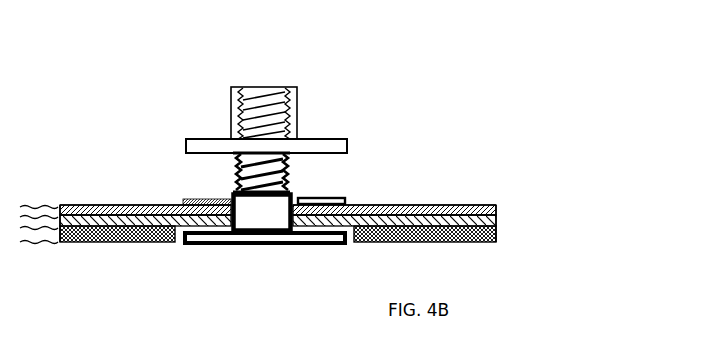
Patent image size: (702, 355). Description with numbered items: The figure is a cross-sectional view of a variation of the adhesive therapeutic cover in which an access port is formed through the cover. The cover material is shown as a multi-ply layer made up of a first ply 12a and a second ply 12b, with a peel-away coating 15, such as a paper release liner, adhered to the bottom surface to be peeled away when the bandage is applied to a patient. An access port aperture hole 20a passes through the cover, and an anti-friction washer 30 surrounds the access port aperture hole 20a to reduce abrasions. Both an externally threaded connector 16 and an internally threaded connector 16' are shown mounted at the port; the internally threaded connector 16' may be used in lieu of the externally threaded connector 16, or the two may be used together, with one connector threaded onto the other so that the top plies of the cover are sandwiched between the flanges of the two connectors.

The internally threaded connector 16' is at (281, 106).
The anti-friction washer 30 is at (185, 200).
The access port aperture hole 20a is at (297, 192).
The first ply 12a is at (465, 199).
The second ply 12b is at (498, 218).
The peel-away coating 15 is at (328, 234).
The externally threaded connector 16 is at (240, 251).